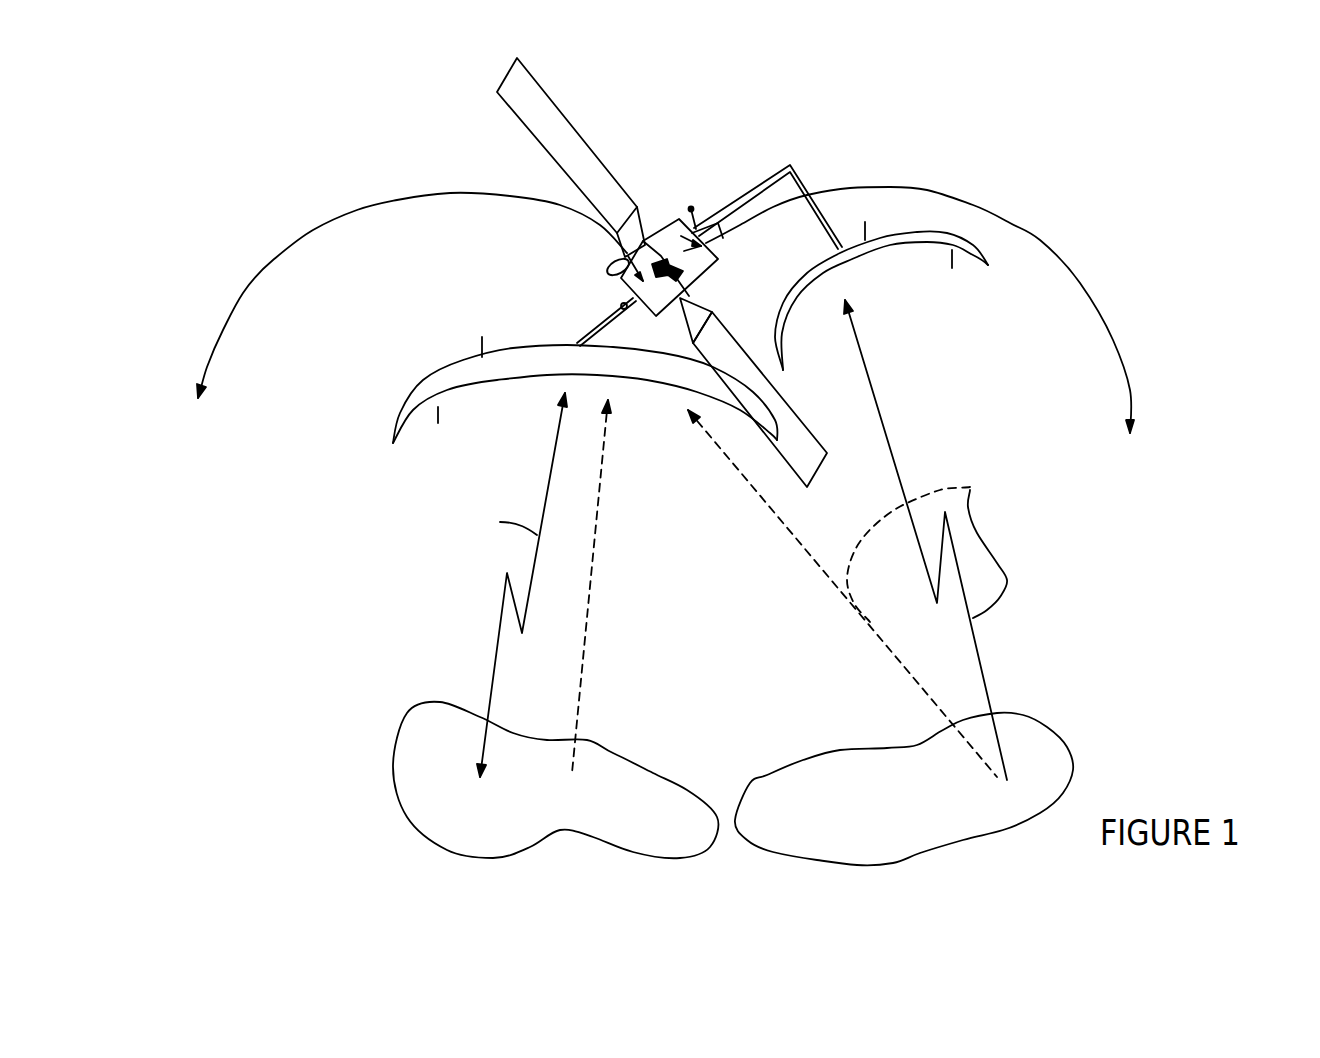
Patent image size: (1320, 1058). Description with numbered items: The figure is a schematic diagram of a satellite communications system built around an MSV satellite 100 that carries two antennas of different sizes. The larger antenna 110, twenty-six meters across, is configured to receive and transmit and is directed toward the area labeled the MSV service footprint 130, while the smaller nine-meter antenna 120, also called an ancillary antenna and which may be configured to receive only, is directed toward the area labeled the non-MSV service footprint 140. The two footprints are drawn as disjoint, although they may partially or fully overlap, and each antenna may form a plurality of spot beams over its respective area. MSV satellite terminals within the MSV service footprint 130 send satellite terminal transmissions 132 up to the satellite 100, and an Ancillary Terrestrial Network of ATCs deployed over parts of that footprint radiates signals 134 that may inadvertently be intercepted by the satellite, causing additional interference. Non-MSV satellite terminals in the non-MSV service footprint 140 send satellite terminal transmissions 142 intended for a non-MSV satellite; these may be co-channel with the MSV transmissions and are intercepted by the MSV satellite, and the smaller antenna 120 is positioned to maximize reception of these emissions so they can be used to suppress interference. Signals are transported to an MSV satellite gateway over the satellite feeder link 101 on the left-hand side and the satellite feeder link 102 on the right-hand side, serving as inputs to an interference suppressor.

The satellite 100 is at (620, 283).
The satellite feeder link 101 is at (383, 205).
The satellite feeder link 102 is at (1042, 240).
The antenna 110 is at (442, 372).
The antenna 120 is at (885, 232).
The MSV service footprint 130 is at (635, 763).
The satellite terminal transmissions 132 is at (493, 660).
The signals 134 is at (585, 652).
The non-MSV service footprint 140 is at (1015, 713).
The satellite terminal transmissions 142 is at (887, 433).